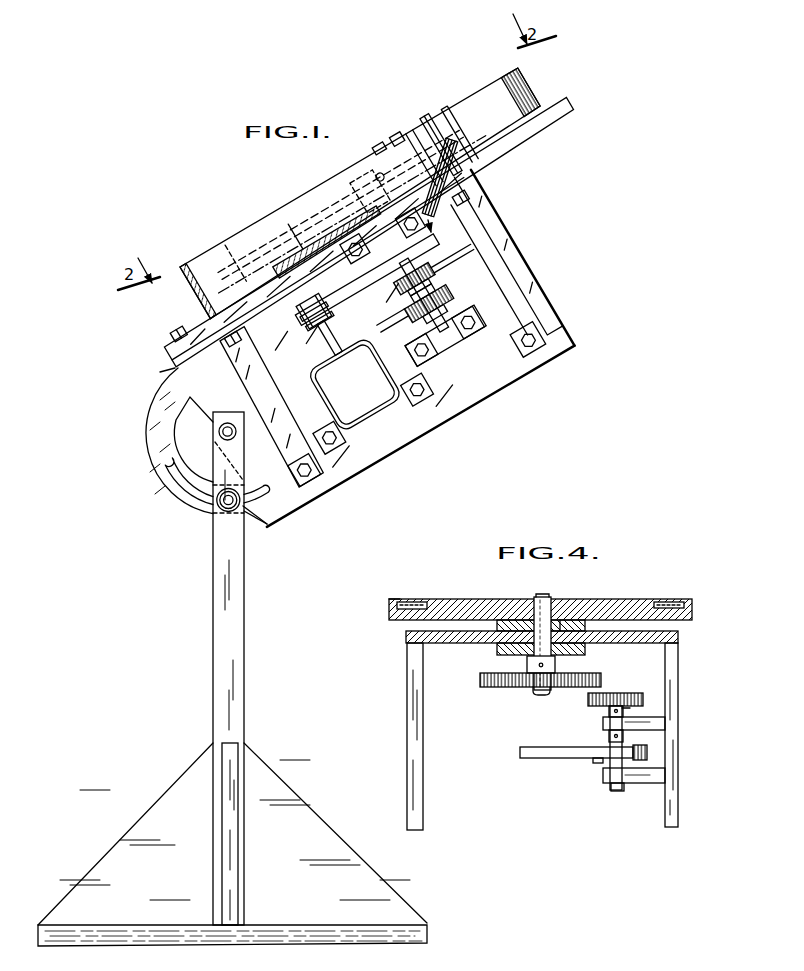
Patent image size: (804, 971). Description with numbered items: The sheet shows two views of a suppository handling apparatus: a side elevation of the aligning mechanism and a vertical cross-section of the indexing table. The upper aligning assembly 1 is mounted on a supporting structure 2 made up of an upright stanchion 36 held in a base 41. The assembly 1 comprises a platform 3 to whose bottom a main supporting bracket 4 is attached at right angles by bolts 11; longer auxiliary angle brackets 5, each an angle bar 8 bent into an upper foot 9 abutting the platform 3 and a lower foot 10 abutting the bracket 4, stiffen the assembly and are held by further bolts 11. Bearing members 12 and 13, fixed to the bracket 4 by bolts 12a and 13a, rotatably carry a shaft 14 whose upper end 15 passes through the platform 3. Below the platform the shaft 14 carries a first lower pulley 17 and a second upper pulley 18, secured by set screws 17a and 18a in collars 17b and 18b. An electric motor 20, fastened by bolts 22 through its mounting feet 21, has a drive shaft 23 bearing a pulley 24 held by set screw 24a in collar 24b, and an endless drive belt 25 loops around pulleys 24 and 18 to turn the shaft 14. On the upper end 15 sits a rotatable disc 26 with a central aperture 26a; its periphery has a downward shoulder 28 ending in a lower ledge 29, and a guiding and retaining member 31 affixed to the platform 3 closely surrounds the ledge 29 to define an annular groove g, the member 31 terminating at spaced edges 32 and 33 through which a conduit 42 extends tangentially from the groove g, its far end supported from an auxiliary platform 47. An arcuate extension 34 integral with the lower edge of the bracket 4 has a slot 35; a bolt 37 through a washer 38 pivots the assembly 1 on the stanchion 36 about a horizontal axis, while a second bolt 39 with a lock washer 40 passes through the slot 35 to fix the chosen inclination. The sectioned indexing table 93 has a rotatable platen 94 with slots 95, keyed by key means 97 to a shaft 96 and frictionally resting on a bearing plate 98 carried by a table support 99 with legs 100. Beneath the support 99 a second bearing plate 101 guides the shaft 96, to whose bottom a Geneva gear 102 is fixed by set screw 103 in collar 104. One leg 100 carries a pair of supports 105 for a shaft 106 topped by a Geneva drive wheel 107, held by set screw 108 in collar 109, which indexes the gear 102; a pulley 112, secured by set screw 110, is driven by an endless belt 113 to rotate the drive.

In FIG. 1, the upper aligning assembly 1 is at (165, 367).
In FIG. 1, the supporting structure 2 is at (232, 679).
In FIG. 1, the platform 3 is at (574, 112).
In FIG. 1, the main supporting bracket 4 is at (536, 281).
In FIG. 1, the auxiliary angle brackets 5 is at (527, 305).
In FIG. 1, the angle bar 8 is at (492, 271).
In FIG. 1, the foot 9 is at (462, 191).
In FIG. 1, the foot 10 is at (546, 338).
In FIG. 1, the bolts 11 is at (472, 201).
In FIG. 1, the bearing member 12 is at (358, 252).
In FIG. 1, the bolts 12a is at (385, 181).
In FIG. 1, the bearing member 13 is at (470, 333).
In FIG. 1, the bolts 13a is at (468, 327).
In FIG. 1, the shaft 14 is at (402, 296).
In FIG. 1, the upper end 15 is at (335, 208).
In FIG. 1, the first lower pulley 17 is at (438, 283).
In FIG. 1, the set screw 17a is at (465, 283).
In FIG. 1, the collar 17b is at (455, 297).
In FIG. 1, the second upper pulley 18 is at (440, 238).
In FIG. 1, the set screw 18a is at (446, 253).
In FIG. 1, the collar 18b is at (452, 265).
In FIG. 1, the electric motor 20 is at (384, 407).
In FIG. 1, the mounting feet 21 is at (330, 443).
In FIG. 1, the bolts 22 is at (416, 397).
In FIG. 1, the drive shaft 23 is at (330, 331).
In FIG. 1, the pulley 24 is at (322, 299).
In FIG. 1, the set screw 24a is at (312, 322).
In FIG. 1, the collar 24b is at (317, 331).
In FIG. 1, the endless drive belt 25 is at (367, 280).
In FIG. 1, the rotatable disc 26 is at (403, 150).
In FIG. 1, the central aperture 26a is at (418, 125).
In FIG. 1, the shoulder 28 is at (440, 120).
In FIG. 1, the lower ledge 29 is at (383, 146).
In FIG. 1, the guiding and retaining member 31 is at (524, 92).
In FIG. 1, the spaced edge 32 is at (452, 113).
In FIG. 1, the spaced edge 33 is at (397, 128).
In FIG. 1, the arcuate extension 34 is at (160, 428).
In FIG. 1, the slot 35 is at (172, 490).
In FIG. 1, the upright stanchion 36 is at (213, 653).
In FIG. 1, the bolt 37 is at (219, 433).
In FIG. 1, the washer 38 is at (216, 448).
In FIG. 1, the second bolt 39 is at (220, 507).
In FIG. 1, the lock washer 40 is at (240, 516).
In FIG. 1, the base 41 is at (132, 822).
In FIG. 1, the conduit 42 is at (480, 173).
In FIG. 1, the auxiliary platform 47 is at (298, 254).
In FIG. 1, the annular groove g is at (200, 264).
In FIG. 4, the indexing table 93 is at (399, 598).
In FIG. 4, the rotatable platen 94 is at (620, 600).
In FIG. 4, the slots 95 is at (681, 601).
In FIG. 4, the shaft 96 is at (544, 596).
In FIG. 4, the key means 97 is at (560, 604).
In FIG. 4, the bearing plate 98 is at (512, 620).
In FIG. 4, the table support 99 is at (680, 639).
In FIG. 4, the legs 100 is at (672, 761).
In FIG. 4, the second bearing plate 101 is at (582, 657).
In FIG. 4, the Geneva gear 102 is at (482, 681).
In FIG. 4, the set screw 103 is at (537, 666).
In FIG. 4, the collar 104 is at (540, 689).
In FIG. 4, the supports 105 is at (660, 723).
In FIG. 4, the shaft 106 is at (614, 793).
In FIG. 4, the Geneva drive wheel 107 is at (630, 692).
In FIG. 4, the set screw 108 is at (612, 712).
In FIG. 4, the collar 109 is at (628, 712).
In FIG. 4, the set screw 110 is at (612, 737).
In FIG. 4, the pulley 112 is at (596, 765).
In FIG. 4, the endless belt 113 is at (522, 753).